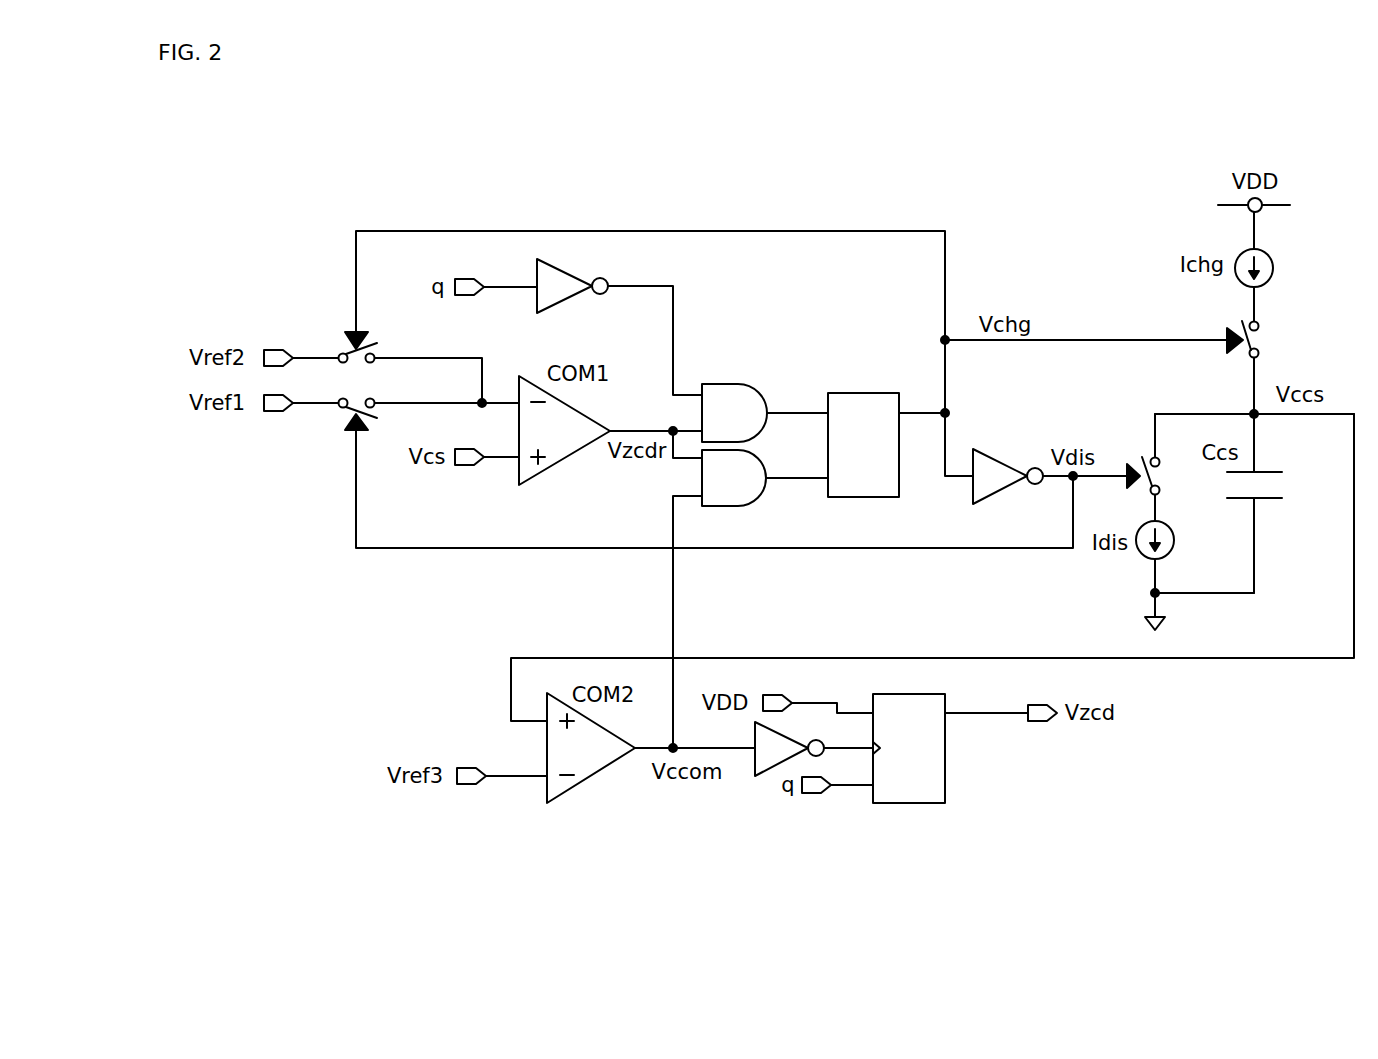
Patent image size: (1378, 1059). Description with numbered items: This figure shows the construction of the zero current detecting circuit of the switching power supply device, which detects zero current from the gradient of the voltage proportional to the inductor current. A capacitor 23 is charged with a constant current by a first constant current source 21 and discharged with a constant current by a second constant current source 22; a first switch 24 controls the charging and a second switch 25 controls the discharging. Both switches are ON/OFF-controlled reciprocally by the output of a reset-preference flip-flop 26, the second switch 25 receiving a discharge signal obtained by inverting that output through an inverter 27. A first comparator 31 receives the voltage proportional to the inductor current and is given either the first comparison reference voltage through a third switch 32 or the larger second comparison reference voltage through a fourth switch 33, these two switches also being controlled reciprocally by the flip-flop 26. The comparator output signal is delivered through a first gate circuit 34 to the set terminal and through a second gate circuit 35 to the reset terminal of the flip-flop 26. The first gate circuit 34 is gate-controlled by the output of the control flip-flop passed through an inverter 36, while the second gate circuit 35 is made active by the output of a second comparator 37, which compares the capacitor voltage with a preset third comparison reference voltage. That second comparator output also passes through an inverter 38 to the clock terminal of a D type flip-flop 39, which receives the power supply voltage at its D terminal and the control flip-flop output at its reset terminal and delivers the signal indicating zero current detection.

The first constant current source 21 is at (1273, 268).
The second constant current source 22 is at (1174, 545).
The capacitor 23 is at (1268, 500).
The first switch 24 is at (1262, 340).
The second switch 25 is at (1142, 452).
The flip-flop 26 is at (864, 393).
The inverter 27 is at (981, 451).
The first comparator 31 is at (571, 468).
The third switch 32 is at (344, 420).
The fourth switch 33 is at (344, 343).
The first gate circuit 34 is at (724, 383).
The second gate circuit 35 is at (722, 506).
The inverter 36 is at (574, 262).
The second comparator 37 is at (586, 780).
The inverter 38 is at (760, 778).
The D type flip-flop 39 is at (945, 797).